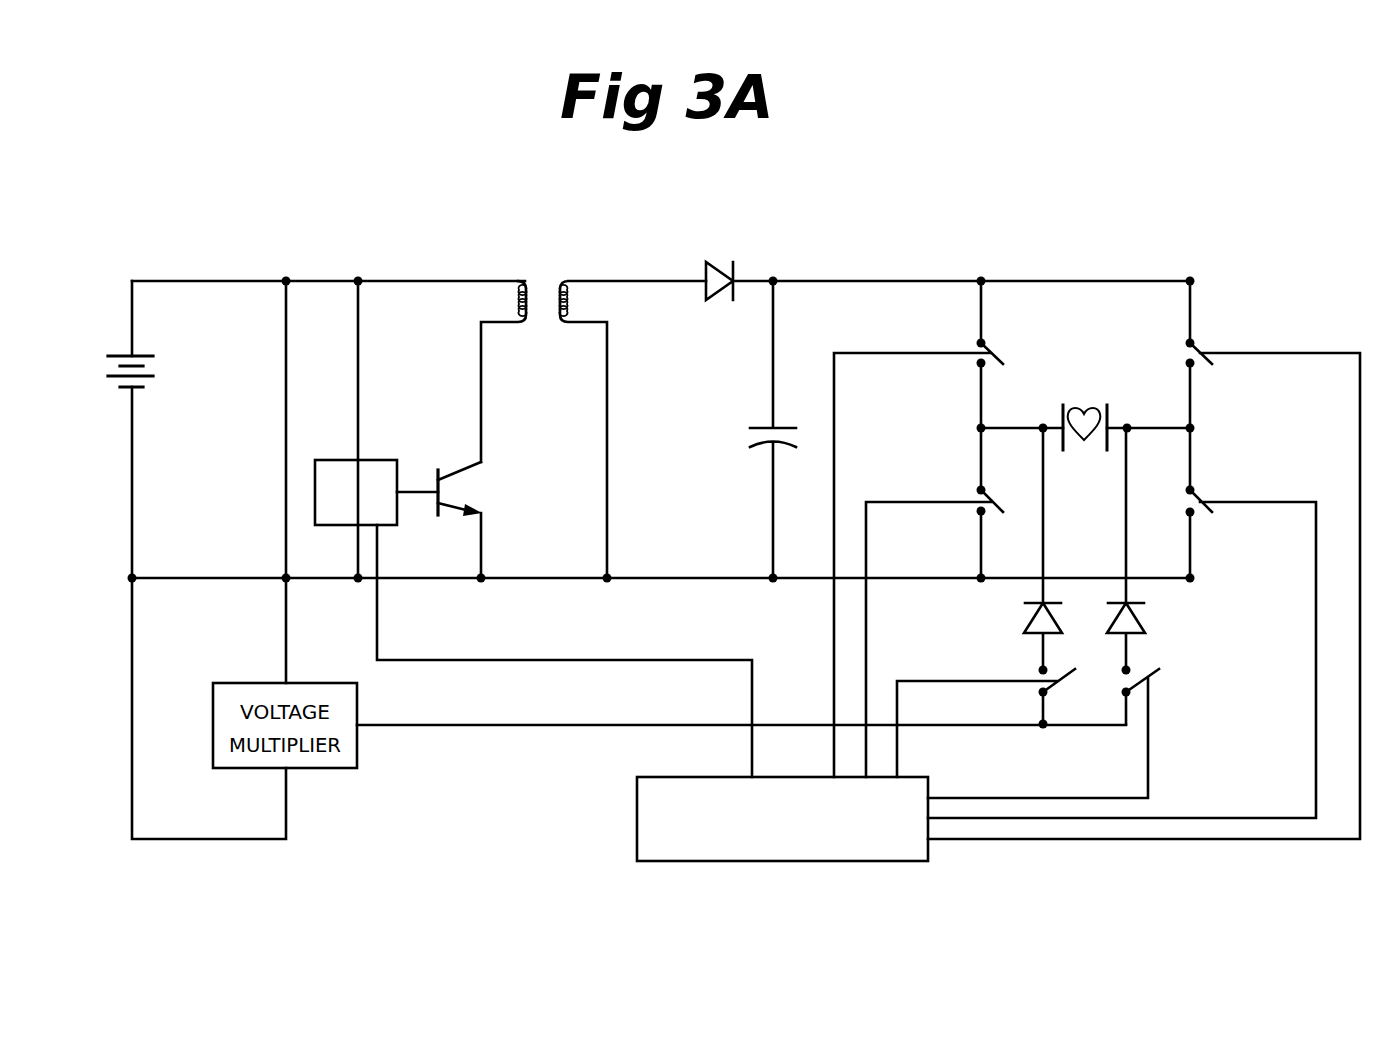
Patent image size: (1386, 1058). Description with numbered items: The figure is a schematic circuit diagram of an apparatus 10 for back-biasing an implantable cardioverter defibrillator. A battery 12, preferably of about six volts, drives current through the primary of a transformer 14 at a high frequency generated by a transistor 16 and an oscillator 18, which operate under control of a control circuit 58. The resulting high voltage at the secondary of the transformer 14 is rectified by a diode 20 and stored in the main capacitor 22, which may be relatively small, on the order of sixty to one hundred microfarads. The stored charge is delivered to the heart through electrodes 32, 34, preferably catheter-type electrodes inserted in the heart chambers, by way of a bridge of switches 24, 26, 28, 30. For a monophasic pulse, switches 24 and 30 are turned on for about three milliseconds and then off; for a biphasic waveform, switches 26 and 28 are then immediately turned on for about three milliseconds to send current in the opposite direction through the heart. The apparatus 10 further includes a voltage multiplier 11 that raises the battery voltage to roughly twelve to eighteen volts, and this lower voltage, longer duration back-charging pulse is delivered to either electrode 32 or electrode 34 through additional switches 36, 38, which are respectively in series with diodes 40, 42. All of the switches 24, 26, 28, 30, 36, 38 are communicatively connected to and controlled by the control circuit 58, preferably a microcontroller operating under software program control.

The apparatus 10 is at (284, 200).
The voltage multiplier 11 is at (1078, 468).
The battery 12 is at (148, 429).
The transformer 14 is at (593, 429).
The transistor 16 is at (456, 520).
The oscillator 18 is at (377, 460).
The diode 20 is at (843, 262).
The capacitor 22 is at (757, 428).
The switch 24 is at (934, 529).
The switch 26 is at (1144, 560).
The switch 28 is at (945, 602).
The switch 30 is at (1122, 623).
The electrode 32 is at (1046, 422).
The electrode 34 is at (1123, 422).
The switch 36 is at (997, 722).
The switch 38 is at (1060, 732).
The diode 40 is at (1025, 549).
The diode 42 is at (1144, 549).
The control circuit 58 is at (772, 861).